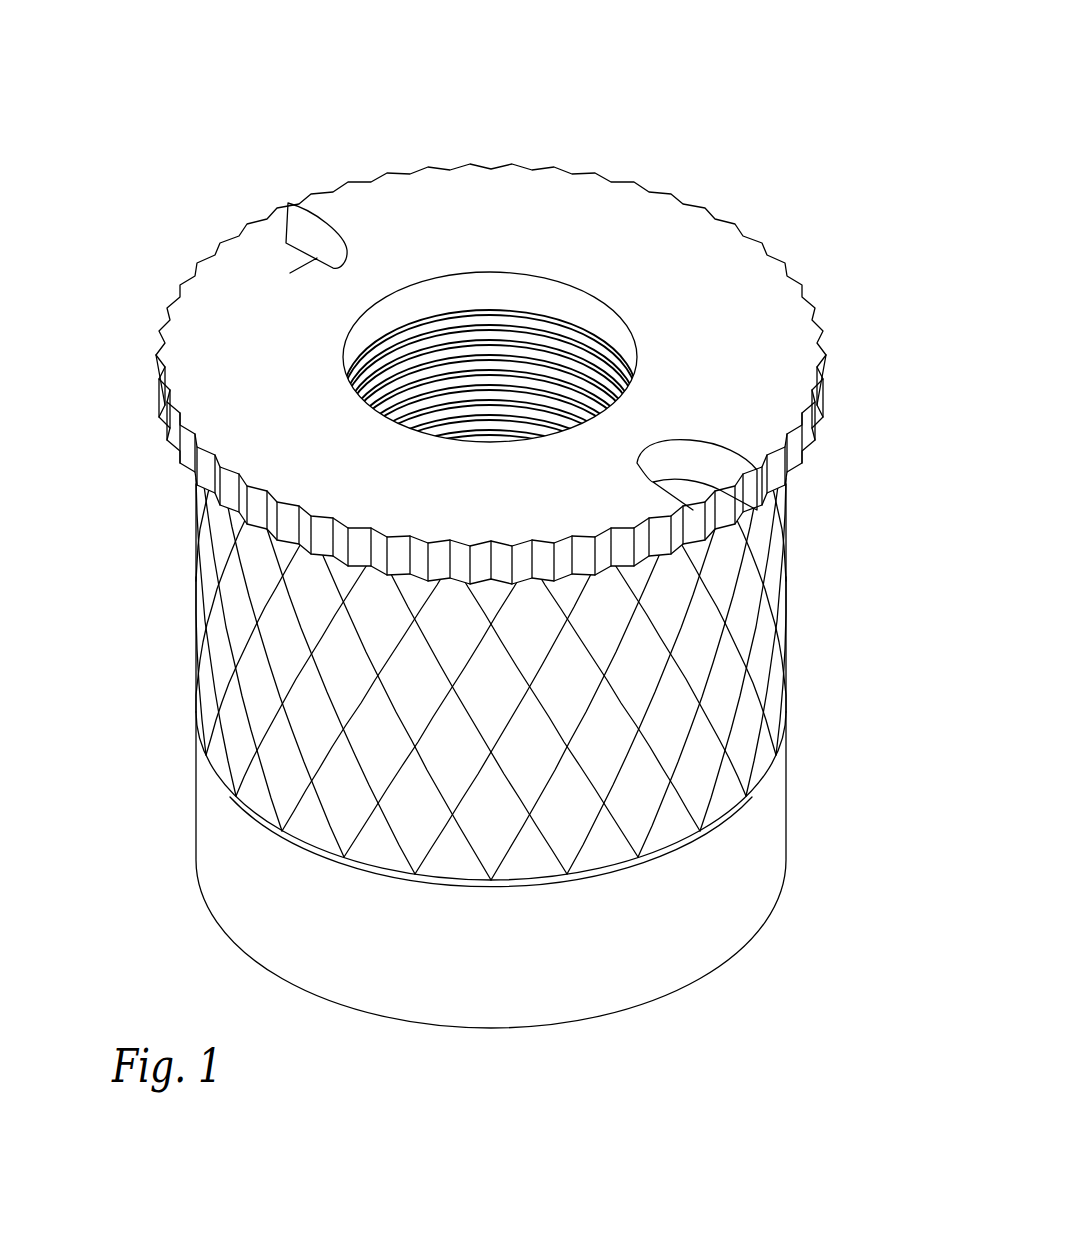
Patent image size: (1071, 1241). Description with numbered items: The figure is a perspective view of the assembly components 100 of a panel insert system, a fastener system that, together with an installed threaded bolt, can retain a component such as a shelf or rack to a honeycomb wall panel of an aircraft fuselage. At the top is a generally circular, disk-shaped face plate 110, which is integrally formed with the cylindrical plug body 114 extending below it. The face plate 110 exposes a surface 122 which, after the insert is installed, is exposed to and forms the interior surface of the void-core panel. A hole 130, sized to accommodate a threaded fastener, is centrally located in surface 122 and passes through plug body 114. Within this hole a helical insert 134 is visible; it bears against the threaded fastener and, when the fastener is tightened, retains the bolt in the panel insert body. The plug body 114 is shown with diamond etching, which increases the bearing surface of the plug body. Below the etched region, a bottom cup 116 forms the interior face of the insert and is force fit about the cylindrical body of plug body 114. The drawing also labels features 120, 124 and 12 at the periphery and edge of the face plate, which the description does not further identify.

The assembly components 100 is at (481, 520).
The face plate 110 is at (481, 331).
The serrated flange 120 is at (152, 295).
The surface 122 is at (252, 398).
The drive slot 124 is at (265, 246).
The drive slot 12 is at (708, 470).
The hole 130 is at (426, 298).
The helical insert 134 is at (527, 337).
The plug body 114 is at (778, 550).
The bottom cup 116 is at (778, 848).